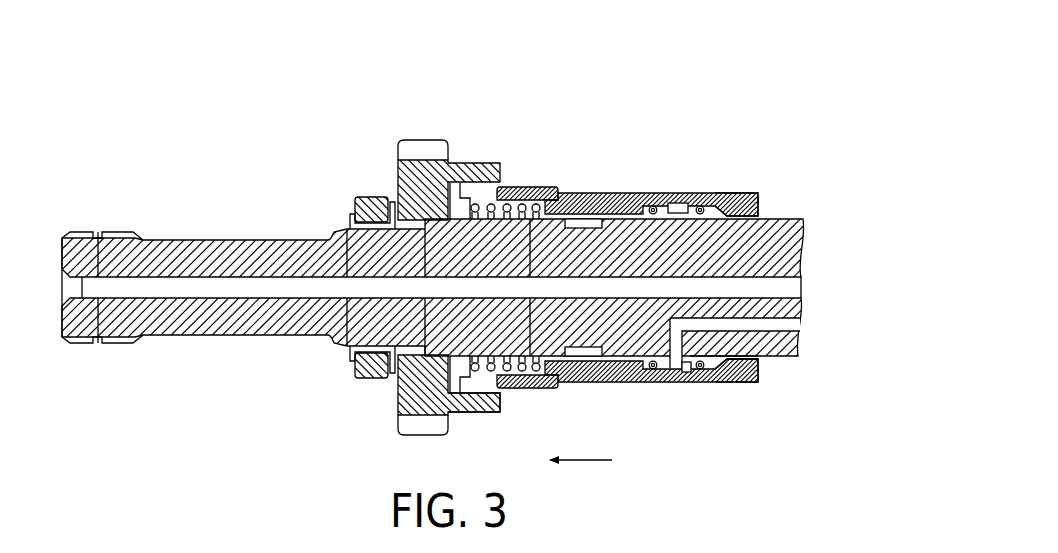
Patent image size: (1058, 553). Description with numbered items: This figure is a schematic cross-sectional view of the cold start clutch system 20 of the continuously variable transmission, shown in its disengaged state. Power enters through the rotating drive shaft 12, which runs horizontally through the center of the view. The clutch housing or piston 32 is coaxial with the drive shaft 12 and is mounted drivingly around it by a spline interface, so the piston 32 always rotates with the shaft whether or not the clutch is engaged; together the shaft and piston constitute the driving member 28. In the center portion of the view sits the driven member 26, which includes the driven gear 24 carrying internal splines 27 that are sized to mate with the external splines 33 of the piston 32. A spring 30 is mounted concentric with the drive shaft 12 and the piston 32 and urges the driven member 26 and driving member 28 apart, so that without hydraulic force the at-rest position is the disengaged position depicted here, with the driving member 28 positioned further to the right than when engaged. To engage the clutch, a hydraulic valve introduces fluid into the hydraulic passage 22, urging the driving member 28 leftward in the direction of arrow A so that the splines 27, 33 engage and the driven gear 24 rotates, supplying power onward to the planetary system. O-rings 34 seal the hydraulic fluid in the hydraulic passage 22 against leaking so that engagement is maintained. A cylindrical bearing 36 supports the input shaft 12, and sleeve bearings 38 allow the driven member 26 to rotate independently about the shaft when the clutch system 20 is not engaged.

The drive shaft 12 is at (238, 240).
The cold start clutch system 20 is at (796, 88).
The hydraulic passage 22 is at (773, 358).
The driven gear 24 is at (424, 140).
The driven member 26 is at (475, 413).
The internal splines 27 is at (490, 200).
The driving member 28 is at (605, 193).
The spring 30 is at (473, 200).
The clutch housing or piston 32 is at (733, 193).
The external splines 33 is at (540, 187).
The O-rings 34 is at (694, 396).
The cylindrical bearing 36 is at (372, 197).
The sleeve bearings 38 is at (410, 368).